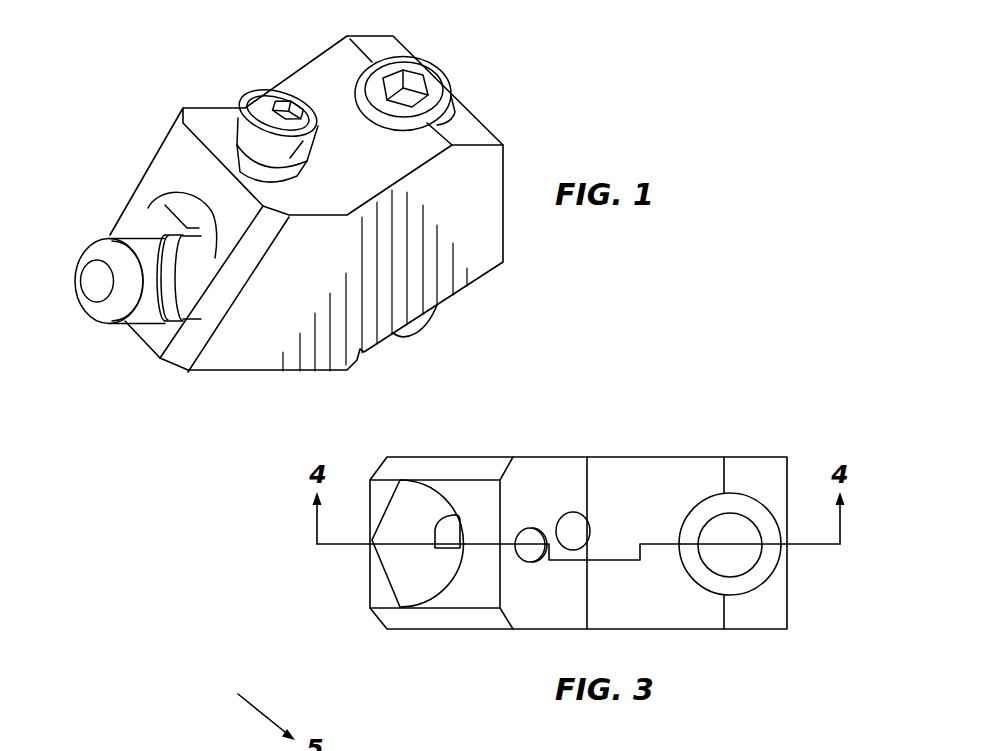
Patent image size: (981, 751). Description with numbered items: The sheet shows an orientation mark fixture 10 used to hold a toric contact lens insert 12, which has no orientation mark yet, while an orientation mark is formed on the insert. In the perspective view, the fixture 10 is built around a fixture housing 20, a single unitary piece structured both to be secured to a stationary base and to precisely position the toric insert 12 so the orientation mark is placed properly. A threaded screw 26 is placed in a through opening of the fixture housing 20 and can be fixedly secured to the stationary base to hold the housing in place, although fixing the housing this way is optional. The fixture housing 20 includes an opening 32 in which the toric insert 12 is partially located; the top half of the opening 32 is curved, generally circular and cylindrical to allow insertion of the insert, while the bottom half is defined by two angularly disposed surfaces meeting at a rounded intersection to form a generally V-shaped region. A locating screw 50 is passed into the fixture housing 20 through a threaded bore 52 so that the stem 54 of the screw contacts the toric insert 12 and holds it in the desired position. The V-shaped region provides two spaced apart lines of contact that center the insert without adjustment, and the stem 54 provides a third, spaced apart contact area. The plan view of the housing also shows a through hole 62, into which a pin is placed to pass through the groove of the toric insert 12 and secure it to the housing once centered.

In FIG. 1, the orientation mark fixture 10 is at (140, 100).
In FIG. 1, the toric contact lens insert 12 is at (90, 345).
In FIG. 1, the fixture housing 20 is at (452, 242).
In FIG. 3, the fixture housing 20 is at (768, 652).
In FIG. 1, the threaded screw 26 is at (437, 84).
In FIG. 1, the opening 32 is at (124, 222).
In FIG. 1, the locating screw 50 is at (257, 123).
In FIG. 1, the stem 54 is at (193, 228).
In FIG. 3, the threaded bore 52 is at (530, 557).
In FIG. 3, the through hole 62 is at (573, 530).